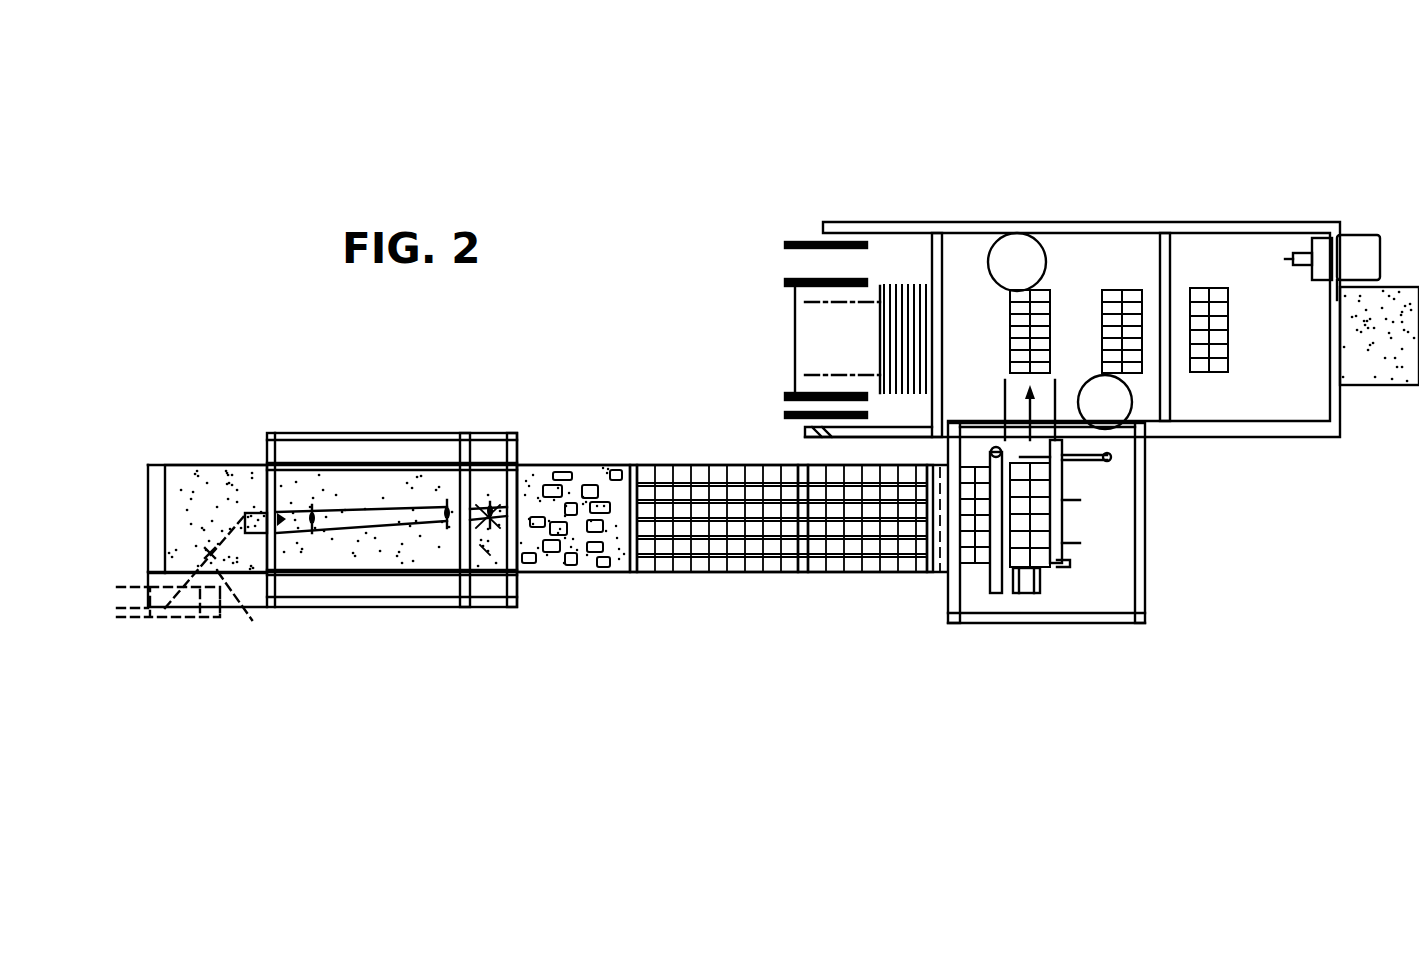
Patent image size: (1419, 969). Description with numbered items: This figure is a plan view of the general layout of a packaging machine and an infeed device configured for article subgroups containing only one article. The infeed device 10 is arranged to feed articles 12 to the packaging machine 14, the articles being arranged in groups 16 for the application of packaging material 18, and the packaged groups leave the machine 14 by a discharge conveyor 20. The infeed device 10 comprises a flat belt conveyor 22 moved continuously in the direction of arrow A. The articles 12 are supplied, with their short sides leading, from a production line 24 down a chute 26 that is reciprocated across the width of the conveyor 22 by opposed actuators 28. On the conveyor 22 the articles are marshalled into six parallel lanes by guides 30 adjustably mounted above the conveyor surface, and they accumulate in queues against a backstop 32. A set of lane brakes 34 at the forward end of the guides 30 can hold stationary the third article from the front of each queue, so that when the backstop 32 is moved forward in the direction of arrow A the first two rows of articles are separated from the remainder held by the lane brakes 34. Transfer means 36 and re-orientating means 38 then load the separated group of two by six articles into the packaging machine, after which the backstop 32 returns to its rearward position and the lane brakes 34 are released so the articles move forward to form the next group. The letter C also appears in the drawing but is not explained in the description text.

The infeed device 10 is at (644, 410).
The articles 12 is at (600, 467).
The packaging machine 14 is at (736, 312).
The groups 16 is at (1117, 290).
The packaging material 18 is at (882, 301).
The discharge conveyor 20 is at (1368, 362).
The flat belt conveyor 22 is at (197, 470).
The production line 24 is at (226, 578).
The chute 26 is at (418, 515).
The opposed actuators 28 is at (462, 445).
The guides 30 is at (763, 480).
The backstop 32 is at (1063, 487).
The lane brakes 34 is at (983, 588).
The transfer means 36 is at (1025, 593).
The re-orientating means 38 is at (1033, 547).
The arrow A is at (366, 491).
The cartridge C is at (1010, 425).